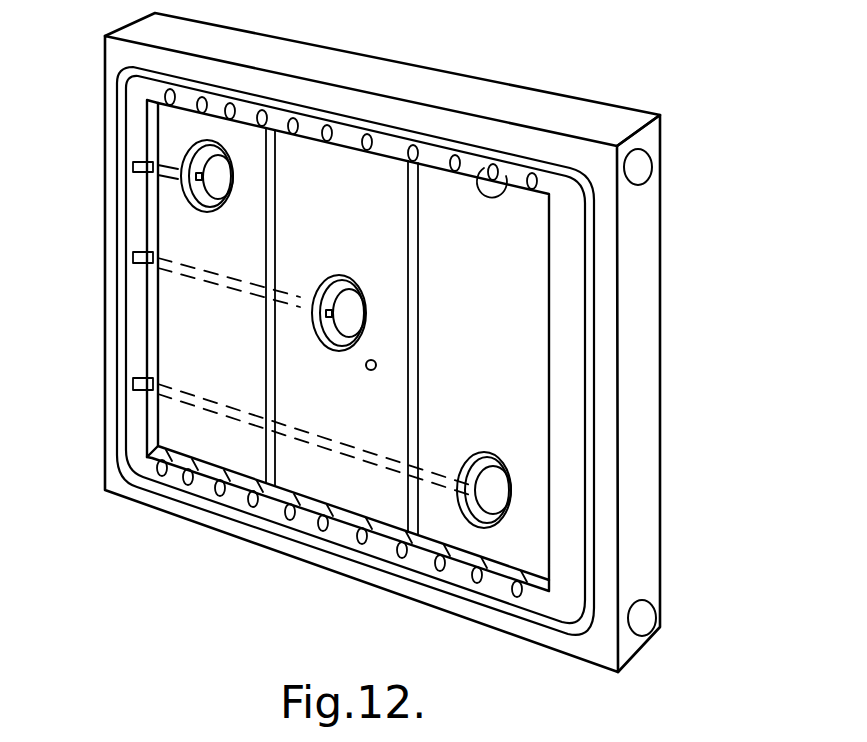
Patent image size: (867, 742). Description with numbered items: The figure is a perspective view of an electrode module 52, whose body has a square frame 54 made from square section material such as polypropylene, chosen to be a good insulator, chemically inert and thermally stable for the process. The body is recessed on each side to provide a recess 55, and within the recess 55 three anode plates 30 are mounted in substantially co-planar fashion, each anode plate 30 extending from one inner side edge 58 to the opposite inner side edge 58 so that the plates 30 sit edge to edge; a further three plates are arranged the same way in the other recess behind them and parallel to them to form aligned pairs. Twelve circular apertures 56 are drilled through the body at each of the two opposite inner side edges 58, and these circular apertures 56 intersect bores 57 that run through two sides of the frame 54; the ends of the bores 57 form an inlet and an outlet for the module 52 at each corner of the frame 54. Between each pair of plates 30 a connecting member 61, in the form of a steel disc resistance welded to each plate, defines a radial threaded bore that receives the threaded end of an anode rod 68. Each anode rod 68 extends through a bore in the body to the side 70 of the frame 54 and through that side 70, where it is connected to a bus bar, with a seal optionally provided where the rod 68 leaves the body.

The anode plate 30 is at (234, 378).
The electrode module 52 is at (665, 283).
The square frame 54 is at (655, 542).
The recess 55 is at (470, 568).
The circular aperture 56 is at (172, 90).
The bore 57 is at (653, 169).
The inner side edge 58 is at (484, 168).
The connecting member 61 is at (200, 152).
The anode rod 68 is at (180, 392).
The side 70 is at (153, 330).